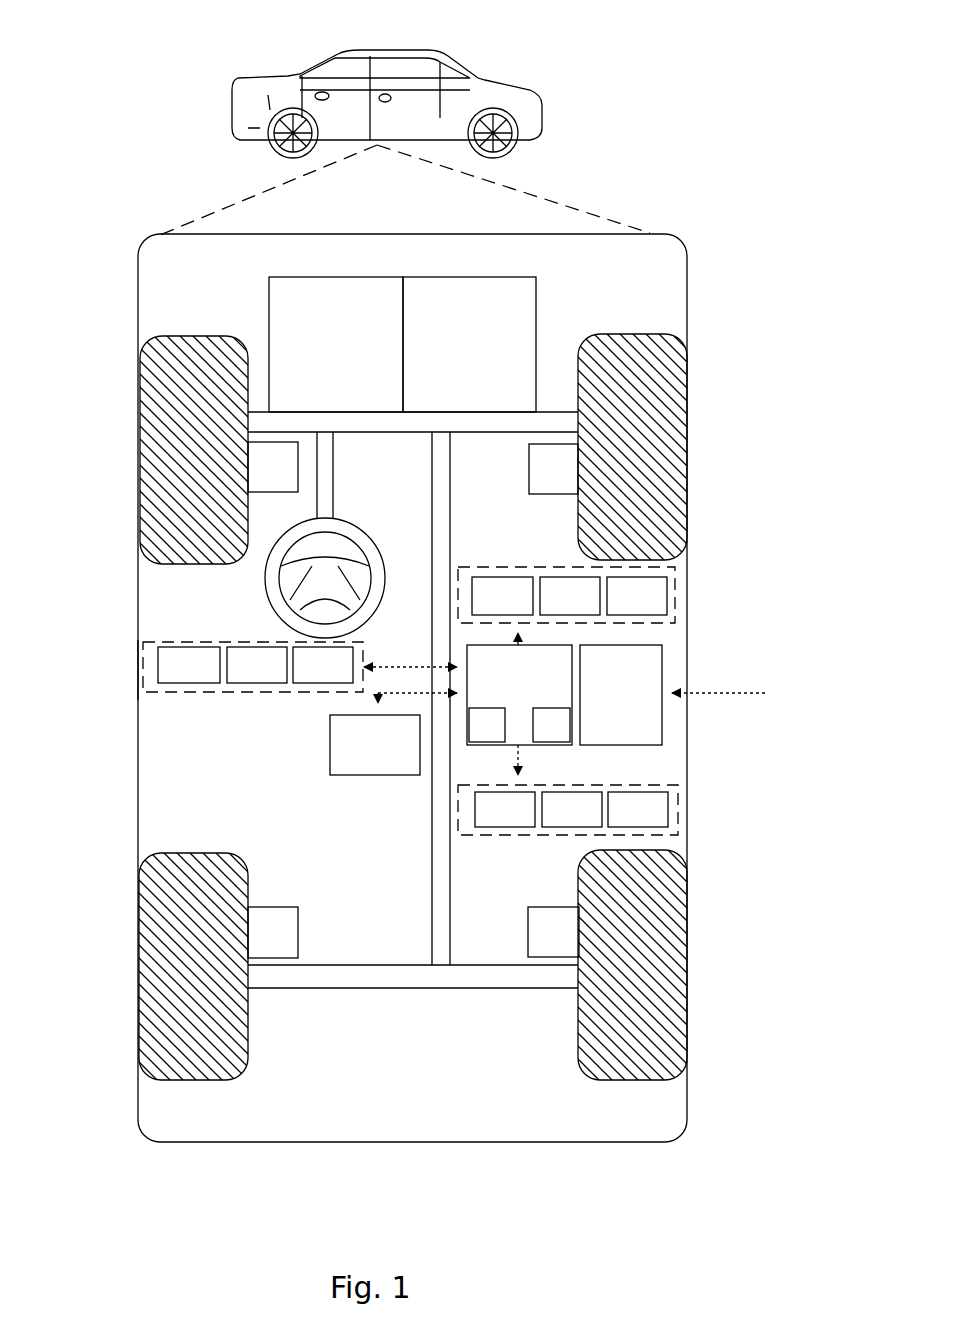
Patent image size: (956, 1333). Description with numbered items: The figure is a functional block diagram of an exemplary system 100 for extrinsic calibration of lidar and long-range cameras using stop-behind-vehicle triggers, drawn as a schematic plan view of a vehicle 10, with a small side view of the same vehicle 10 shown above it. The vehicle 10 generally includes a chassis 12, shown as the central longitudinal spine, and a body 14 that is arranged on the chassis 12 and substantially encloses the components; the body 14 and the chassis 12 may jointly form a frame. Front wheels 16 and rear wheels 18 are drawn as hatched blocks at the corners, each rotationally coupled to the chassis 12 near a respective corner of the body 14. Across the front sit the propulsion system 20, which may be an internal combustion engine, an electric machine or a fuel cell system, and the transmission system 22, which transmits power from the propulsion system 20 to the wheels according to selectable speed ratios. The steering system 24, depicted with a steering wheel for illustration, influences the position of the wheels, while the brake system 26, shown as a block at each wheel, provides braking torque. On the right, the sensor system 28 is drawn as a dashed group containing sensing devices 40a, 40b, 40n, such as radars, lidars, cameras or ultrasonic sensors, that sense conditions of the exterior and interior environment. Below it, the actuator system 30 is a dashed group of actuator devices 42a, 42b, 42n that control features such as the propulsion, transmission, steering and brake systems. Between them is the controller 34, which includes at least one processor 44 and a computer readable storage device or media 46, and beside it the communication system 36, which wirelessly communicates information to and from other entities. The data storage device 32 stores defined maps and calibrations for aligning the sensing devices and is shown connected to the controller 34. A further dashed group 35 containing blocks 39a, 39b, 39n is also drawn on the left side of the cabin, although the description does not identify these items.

The vehicle 10 is at (238, 120).
The system 100 is at (722, 246).
The chassis 12 is at (430, 888).
The body 14 is at (138, 668).
The front wheels 16 is at (190, 336).
The rear wheels 18 is at (212, 1080).
The propulsion system 20 is at (351, 357).
The transmission system 22 is at (483, 357).
The steering system 24 is at (362, 461).
The brake system 26 is at (286, 478).
The sensor system 28 is at (496, 567).
The actuator system 30 is at (515, 835).
The data storage device 32 is at (390, 756).
The controller 34 is at (534, 704).
The display system 35 is at (200, 692).
The communication system 36 is at (636, 706).
The display device 39a is at (212, 678).
The display device 39b is at (280, 678).
The display device 39n is at (346, 678).
The sensing device 40a is at (526, 609).
The sensing device 40b is at (593, 609).
The sensing device 40n is at (660, 609).
The actuator device 42a is at (528, 822).
The actuator device 42b is at (595, 822).
The actuator device 42n is at (661, 822).
The processor 44 is at (500, 738).
The computer readable storage device or media 46 is at (565, 738).